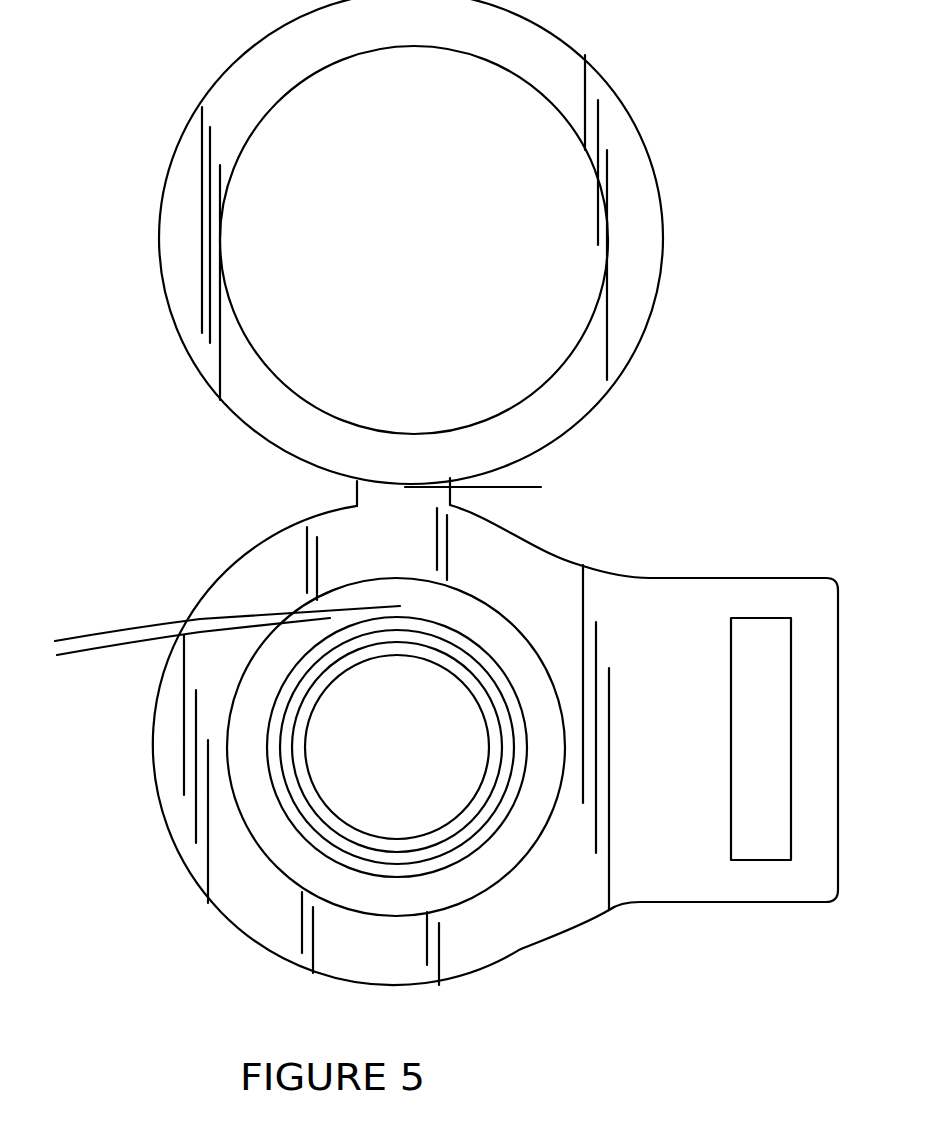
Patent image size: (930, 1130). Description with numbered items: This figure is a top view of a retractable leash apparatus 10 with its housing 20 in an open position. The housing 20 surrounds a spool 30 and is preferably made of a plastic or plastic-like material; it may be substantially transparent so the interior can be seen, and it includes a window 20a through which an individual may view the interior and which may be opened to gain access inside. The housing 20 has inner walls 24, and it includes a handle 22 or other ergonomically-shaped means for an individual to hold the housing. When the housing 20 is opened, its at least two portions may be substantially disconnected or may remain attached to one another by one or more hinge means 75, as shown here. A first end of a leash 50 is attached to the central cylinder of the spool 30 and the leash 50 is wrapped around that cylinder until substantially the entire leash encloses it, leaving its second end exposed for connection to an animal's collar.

The retractable leash apparatus 10 is at (76, 91).
The housing 20 is at (540, 587).
The window 20a is at (430, 245).
The handle 22 is at (818, 677).
The inner walls 24 is at (213, 687).
The spool 30 is at (297, 865).
The leash 50 is at (165, 623).
The hinge means 75 is at (541, 487).